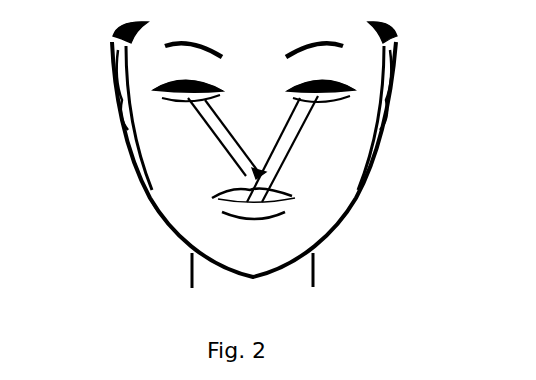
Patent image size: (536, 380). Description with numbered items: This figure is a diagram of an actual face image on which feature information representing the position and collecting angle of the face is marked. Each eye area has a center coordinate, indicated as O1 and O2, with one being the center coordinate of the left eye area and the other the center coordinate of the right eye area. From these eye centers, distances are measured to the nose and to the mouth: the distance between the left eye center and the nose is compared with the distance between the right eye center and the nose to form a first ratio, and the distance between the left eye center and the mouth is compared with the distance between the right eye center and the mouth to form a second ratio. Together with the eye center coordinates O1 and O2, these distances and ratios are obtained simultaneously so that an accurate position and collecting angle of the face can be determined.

The center coordinate of a left eye area O1 is at (185, 95).
The center coordinate of a right eye area O2 is at (335, 100).